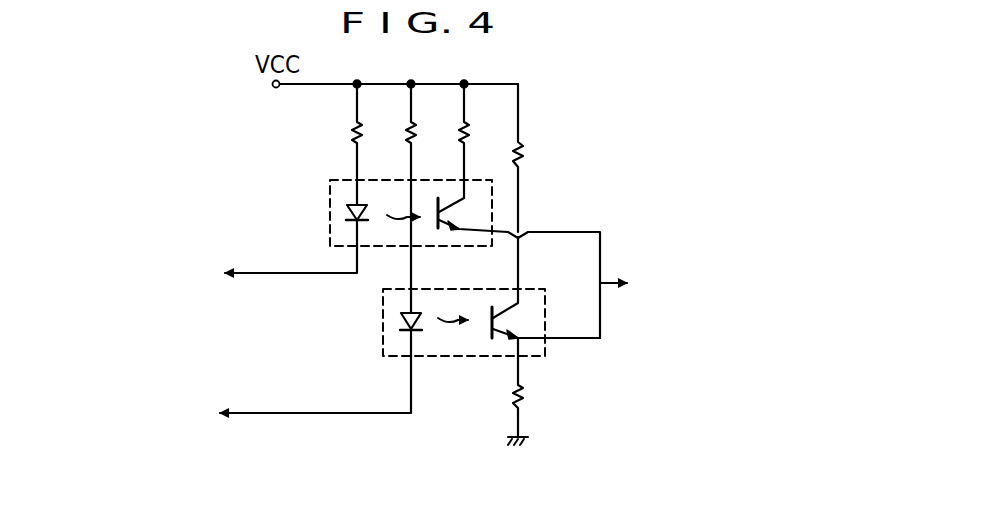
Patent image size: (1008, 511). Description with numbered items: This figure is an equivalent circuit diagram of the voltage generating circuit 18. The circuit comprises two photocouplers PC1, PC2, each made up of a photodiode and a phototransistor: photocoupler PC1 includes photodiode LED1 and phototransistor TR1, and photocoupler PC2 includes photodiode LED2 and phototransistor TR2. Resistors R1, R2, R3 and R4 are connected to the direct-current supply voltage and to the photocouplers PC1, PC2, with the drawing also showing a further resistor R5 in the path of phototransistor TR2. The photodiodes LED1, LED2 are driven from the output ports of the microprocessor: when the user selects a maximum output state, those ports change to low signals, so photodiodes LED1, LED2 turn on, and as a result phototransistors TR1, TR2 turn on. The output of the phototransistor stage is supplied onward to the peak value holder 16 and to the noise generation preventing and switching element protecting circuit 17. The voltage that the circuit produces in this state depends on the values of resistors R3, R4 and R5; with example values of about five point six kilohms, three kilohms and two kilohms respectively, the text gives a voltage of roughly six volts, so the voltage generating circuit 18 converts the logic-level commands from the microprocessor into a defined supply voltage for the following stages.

The resistor R1 is at (342, 144).
The resistor R2 is at (393, 198).
The resistor R3 is at (448, 141).
The resistor R4 is at (535, 158).
The resistor R5 is at (502, 391).
The photodiode LED1 is at (352, 203).
The photodiode LED2 is at (400, 317).
The photocoupler PC1 is at (387, 213).
The photocoupler PC2 is at (489, 322).
The phototransistor TR1 is at (465, 212).
The phototransistor TR2 is at (518, 332).
The peak value holder 16 is at (741, 310).
The noise generation preventing and switching element protecting circuit 17 is at (761, 411).
The voltage generating circuit 18 is at (192, 360).